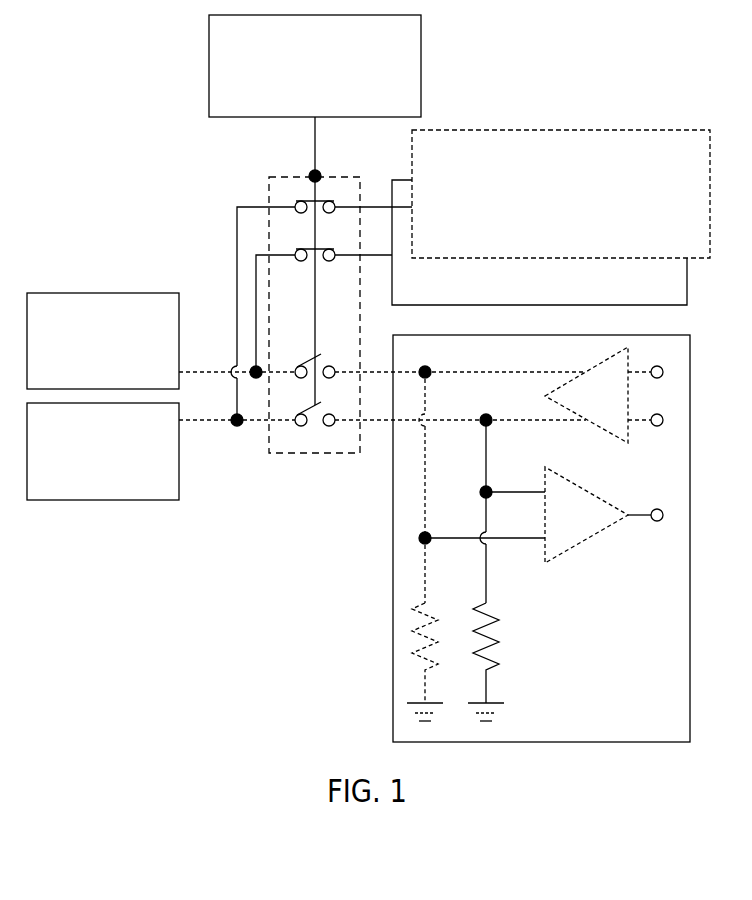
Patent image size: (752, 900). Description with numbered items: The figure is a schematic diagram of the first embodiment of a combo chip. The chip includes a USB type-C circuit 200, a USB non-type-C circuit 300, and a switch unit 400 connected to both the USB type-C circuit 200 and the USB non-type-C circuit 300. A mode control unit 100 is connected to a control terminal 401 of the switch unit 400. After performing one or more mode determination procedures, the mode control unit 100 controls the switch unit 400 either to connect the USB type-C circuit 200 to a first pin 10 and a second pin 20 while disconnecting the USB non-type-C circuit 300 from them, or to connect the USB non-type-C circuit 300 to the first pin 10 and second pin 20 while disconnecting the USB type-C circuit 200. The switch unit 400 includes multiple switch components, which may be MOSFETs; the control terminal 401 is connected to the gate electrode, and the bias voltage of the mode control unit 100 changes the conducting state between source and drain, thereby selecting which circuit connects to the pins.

The mode control unit 100 is at (372, 103).
The USB type-C circuit 200 is at (585, 228).
The USB non-type-C circuit 300 is at (672, 711).
The first pin 10 is at (118, 377).
The second pin 20 is at (147, 487).
The switch unit 400 is at (312, 454).
The control terminal 401 is at (313, 172).